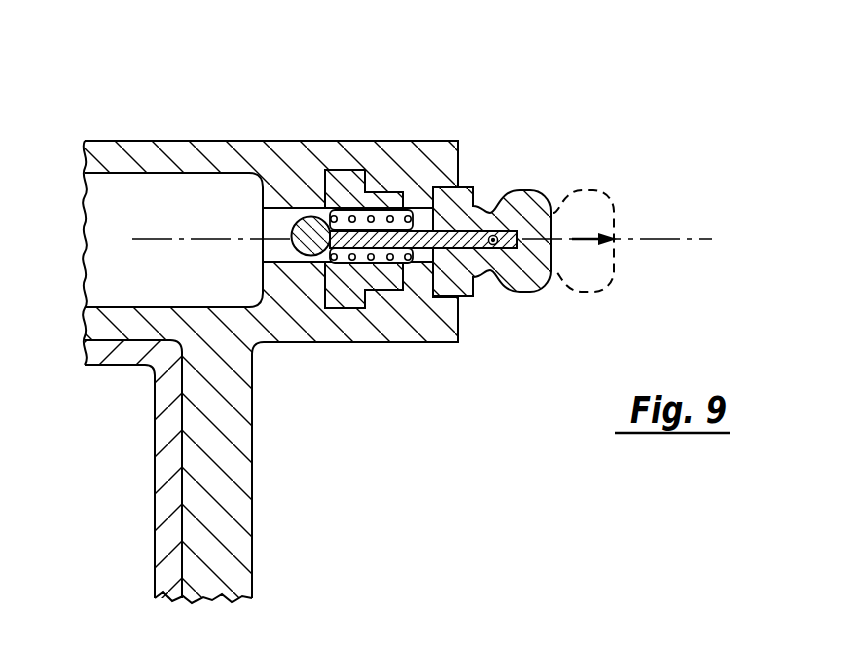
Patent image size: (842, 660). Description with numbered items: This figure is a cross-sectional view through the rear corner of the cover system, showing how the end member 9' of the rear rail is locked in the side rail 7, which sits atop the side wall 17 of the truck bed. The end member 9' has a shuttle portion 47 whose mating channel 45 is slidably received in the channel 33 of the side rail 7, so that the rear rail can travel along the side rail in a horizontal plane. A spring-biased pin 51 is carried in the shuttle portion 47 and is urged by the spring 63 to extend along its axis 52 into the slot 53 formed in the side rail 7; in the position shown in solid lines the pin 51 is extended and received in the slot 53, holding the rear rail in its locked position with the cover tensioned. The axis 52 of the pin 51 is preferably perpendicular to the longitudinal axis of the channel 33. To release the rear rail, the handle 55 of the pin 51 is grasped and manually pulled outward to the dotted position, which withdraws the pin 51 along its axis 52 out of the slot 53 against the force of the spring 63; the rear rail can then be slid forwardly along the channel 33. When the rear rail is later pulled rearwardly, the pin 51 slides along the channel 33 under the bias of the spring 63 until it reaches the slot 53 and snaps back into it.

The side rail 7 is at (291, 160).
The end member of rear rail 9' is at (636, 177).
The side wall 17 is at (153, 498).
The channel 33 is at (322, 283).
The mating channel 45 is at (347, 293).
The shuttle portion 47 is at (438, 141).
The spring-biased pin 51 is at (290, 227).
The axis of the pin 52 is at (153, 238).
The slot 53 is at (283, 257).
The handle 55 is at (533, 190).
The spring 63 is at (392, 194).